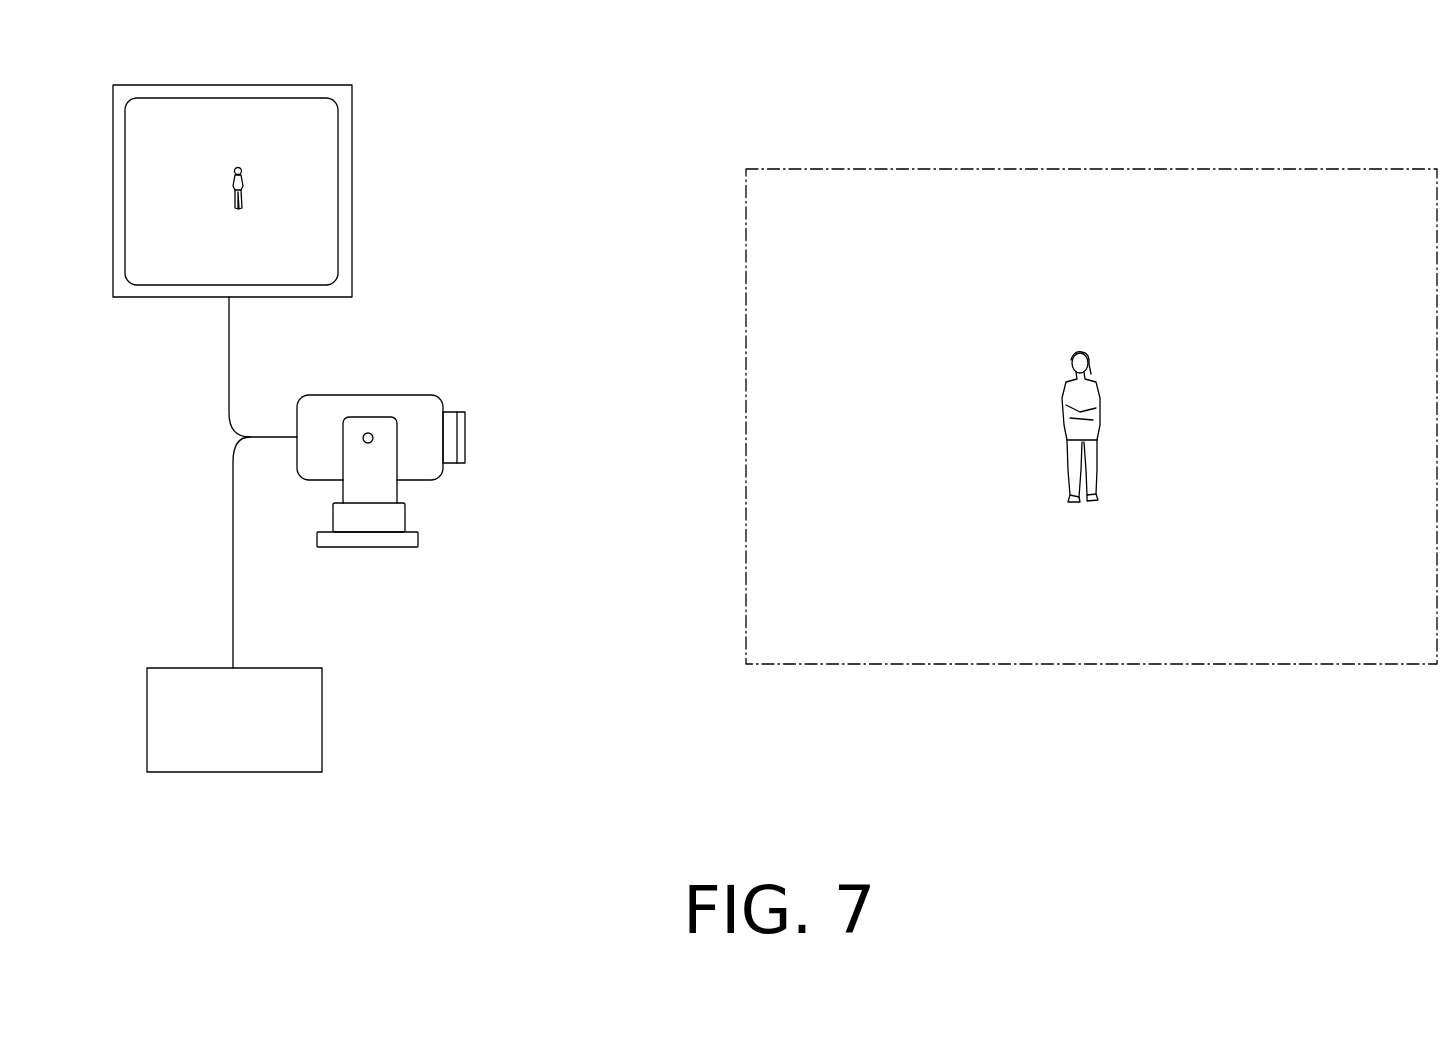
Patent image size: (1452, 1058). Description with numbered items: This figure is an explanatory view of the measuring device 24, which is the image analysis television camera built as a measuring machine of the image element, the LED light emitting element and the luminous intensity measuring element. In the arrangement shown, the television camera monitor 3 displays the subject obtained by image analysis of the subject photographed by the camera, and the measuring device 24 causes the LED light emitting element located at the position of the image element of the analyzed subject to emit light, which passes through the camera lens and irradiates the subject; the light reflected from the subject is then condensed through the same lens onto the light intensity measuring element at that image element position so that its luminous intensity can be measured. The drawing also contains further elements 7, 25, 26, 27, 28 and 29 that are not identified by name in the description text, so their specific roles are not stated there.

The television camera monitor 3 is at (222, 82).
The cable 7 is at (226, 380).
The measuring device 24 is at (417, 395).
The subject person 25 is at (1098, 378).
The imaging area 26 is at (900, 169).
The displayed person image 27 is at (258, 182).
The control device 28 is at (325, 715).
The cable 29 is at (232, 557).